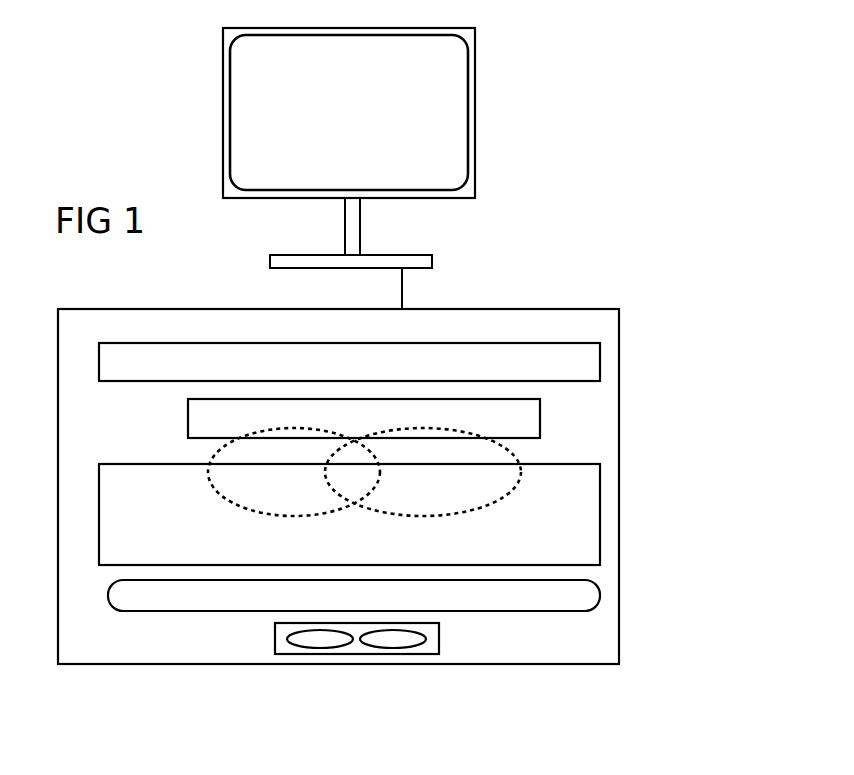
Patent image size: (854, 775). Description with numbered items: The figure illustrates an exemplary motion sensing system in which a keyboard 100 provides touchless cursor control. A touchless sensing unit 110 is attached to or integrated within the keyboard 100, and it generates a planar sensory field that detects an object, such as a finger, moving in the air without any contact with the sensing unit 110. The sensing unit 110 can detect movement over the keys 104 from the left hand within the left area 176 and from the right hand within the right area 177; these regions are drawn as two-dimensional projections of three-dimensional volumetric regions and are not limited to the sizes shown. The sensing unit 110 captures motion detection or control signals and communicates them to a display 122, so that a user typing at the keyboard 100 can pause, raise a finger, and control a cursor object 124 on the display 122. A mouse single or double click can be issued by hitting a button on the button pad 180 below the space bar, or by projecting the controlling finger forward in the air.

The keyboard 100 is at (700, 307).
The keys 104 is at (600, 553).
The touchless sensing unit 110 is at (188, 428).
The display 122 is at (475, 190).
The cursor object 124 is at (270, 92).
The left area 176 is at (288, 516).
The right area 177 is at (438, 512).
The button pad 180 is at (440, 638).